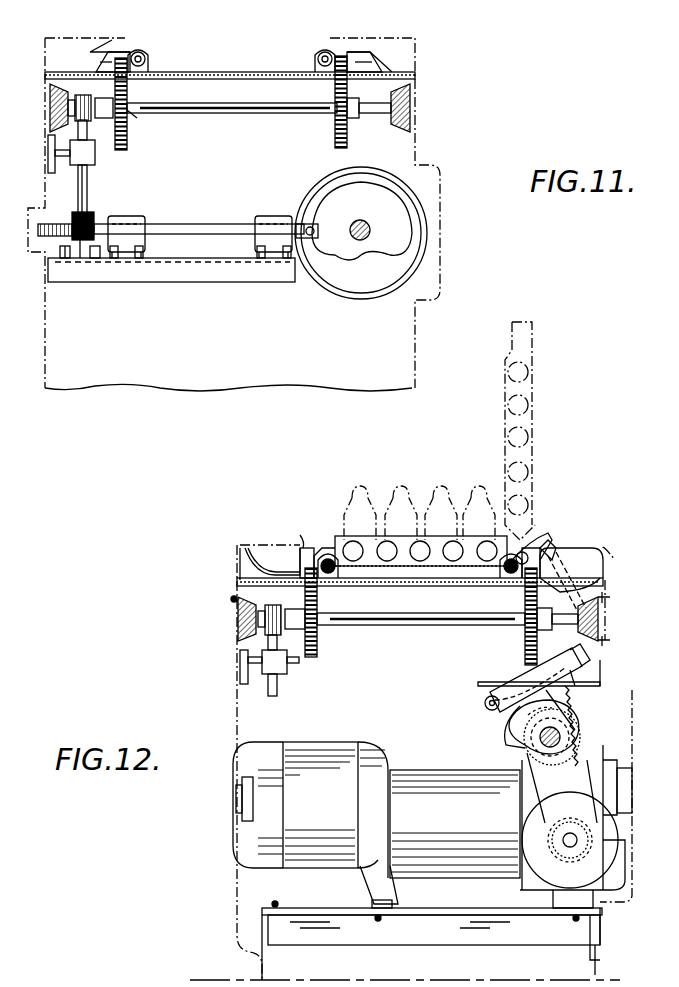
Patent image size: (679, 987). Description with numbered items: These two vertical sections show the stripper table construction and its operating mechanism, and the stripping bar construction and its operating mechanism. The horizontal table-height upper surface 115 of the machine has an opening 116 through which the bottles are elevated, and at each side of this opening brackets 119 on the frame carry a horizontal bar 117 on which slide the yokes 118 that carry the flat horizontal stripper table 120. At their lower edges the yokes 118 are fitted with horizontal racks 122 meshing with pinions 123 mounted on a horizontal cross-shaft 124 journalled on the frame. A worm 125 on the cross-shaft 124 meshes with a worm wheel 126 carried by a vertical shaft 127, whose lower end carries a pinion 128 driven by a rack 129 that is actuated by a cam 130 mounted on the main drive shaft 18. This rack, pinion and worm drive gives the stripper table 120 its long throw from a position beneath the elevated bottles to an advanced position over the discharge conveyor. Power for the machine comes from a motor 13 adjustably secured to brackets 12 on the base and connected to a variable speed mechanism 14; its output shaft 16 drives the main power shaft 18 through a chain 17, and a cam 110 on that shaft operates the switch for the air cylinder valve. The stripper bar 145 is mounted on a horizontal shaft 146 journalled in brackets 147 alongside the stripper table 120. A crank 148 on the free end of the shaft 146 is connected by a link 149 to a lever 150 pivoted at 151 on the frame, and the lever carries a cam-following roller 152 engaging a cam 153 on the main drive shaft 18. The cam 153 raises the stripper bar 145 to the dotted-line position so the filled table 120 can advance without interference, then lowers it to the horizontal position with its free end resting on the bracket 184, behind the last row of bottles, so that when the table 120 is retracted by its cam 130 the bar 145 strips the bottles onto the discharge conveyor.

In FIG. 12, the brackets 12 is at (262, 913).
In FIG. 12, the motor 13 is at (334, 742).
In FIG. 12, the variable speed mechanism 14 is at (607, 788).
In FIG. 12, the output shaft 16 is at (578, 840).
In FIG. 12, the chain 17 is at (595, 812).
In FIG. 11, the main power shaft 18 is at (371, 231).
In FIG. 12, the main power shaft 18 is at (540, 737).
In FIG. 11, the cam 110 is at (97, 105).
In FIG. 12, the cam 110 is at (281, 620).
In FIG. 11, the upper surface 115 is at (50, 72).
In FIG. 12, the upper surface 115 is at (242, 578).
In FIG. 11, the opening 116 is at (138, 116).
In FIG. 12, the opening 116 is at (260, 548).
In FIG. 11, the horizontal bar 117 is at (140, 48).
In FIG. 12, the horizontal bar 117 is at (335, 555).
In FIG. 11, the yokes 118 is at (146, 59).
In FIG. 12, the yokes 118 is at (331, 558).
In FIG. 11, the brackets 119 is at (114, 44).
In FIG. 11, the stripper table 120 is at (222, 72).
In FIG. 12, the stripper table 120 is at (383, 586).
In FIG. 11, the racks 122 is at (108, 60).
In FIG. 12, the racks 122 is at (315, 565).
In FIG. 11, the pinions 123 is at (128, 88).
In FIG. 12, the pinions 123 is at (318, 598).
In FIG. 11, the cross-shaft 124 is at (232, 120).
In FIG. 12, the cross-shaft 124 is at (355, 618).
In FIG. 11, the worm 125 is at (58, 100).
In FIG. 12, the worm 125 is at (262, 620).
In FIG. 11, the worm wheel 126 is at (60, 108).
In FIG. 12, the worm wheel 126 is at (240, 610).
In FIG. 11, the vertical shaft 127 is at (90, 181).
In FIG. 12, the vertical shaft 127 is at (262, 652).
In FIG. 11, the pinion 128 is at (60, 225).
In FIG. 11, the rack 129 is at (182, 228).
In FIG. 11, the cam 130 is at (348, 292).
In FIG. 12, the stripper bar 145 is at (520, 376).
In FIG. 12, the horizontal shaft 146 is at (550, 540).
In FIG. 12, the brackets 147 is at (562, 556).
In FIG. 12, the crank 148 is at (545, 530).
In FIG. 12, the link 149 is at (580, 578).
In FIG. 12, the lever 150 is at (535, 690).
In FIG. 12, the pivot 151 is at (485, 705).
In FIG. 12, the cam-following roller 152 is at (600, 668).
In FIG. 12, the cam 153 is at (560, 715).
In FIG. 12, the bracket 184 is at (303, 540).